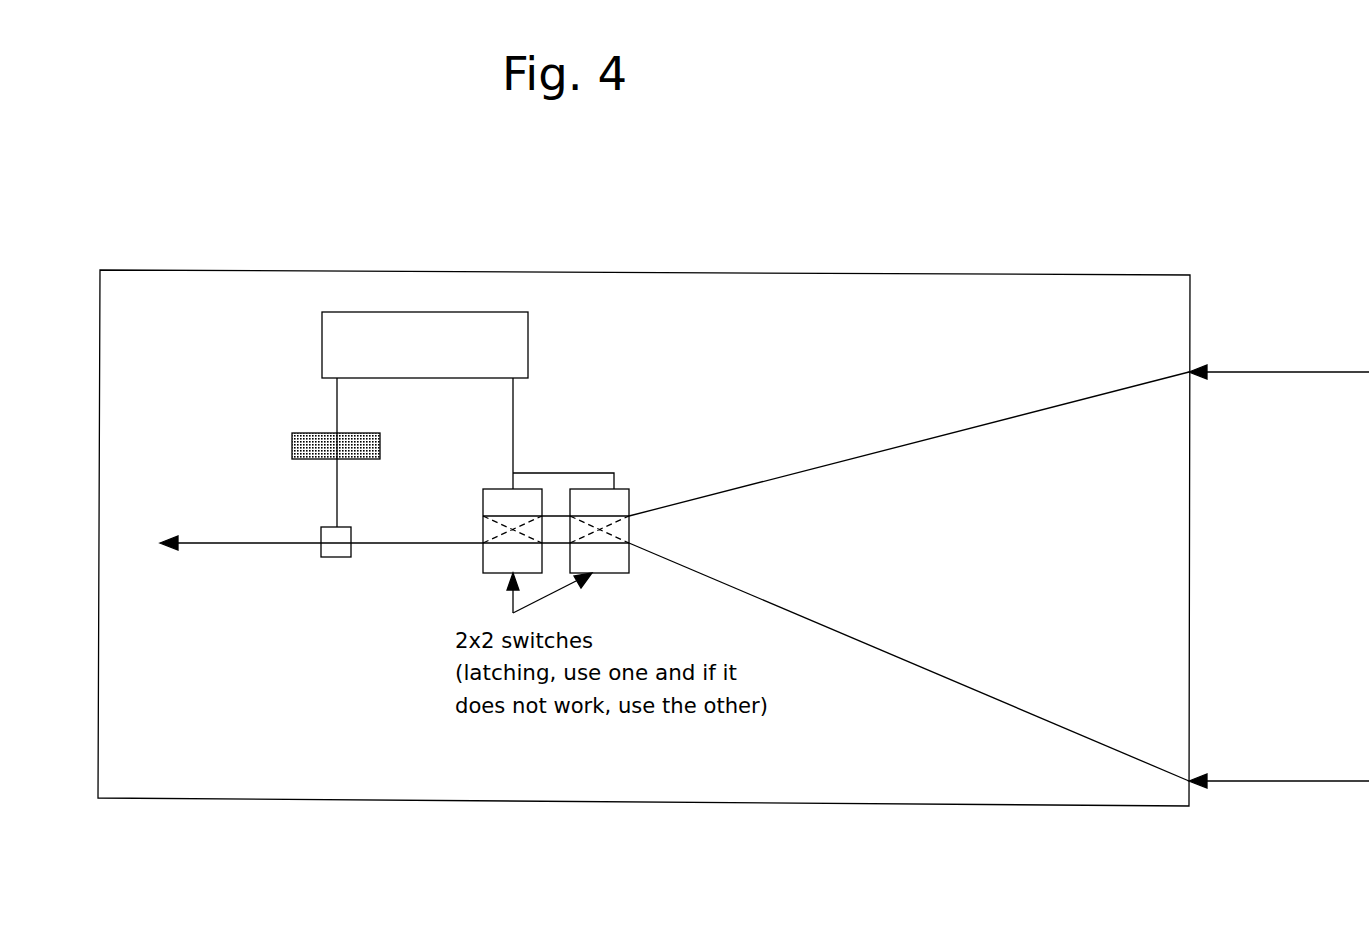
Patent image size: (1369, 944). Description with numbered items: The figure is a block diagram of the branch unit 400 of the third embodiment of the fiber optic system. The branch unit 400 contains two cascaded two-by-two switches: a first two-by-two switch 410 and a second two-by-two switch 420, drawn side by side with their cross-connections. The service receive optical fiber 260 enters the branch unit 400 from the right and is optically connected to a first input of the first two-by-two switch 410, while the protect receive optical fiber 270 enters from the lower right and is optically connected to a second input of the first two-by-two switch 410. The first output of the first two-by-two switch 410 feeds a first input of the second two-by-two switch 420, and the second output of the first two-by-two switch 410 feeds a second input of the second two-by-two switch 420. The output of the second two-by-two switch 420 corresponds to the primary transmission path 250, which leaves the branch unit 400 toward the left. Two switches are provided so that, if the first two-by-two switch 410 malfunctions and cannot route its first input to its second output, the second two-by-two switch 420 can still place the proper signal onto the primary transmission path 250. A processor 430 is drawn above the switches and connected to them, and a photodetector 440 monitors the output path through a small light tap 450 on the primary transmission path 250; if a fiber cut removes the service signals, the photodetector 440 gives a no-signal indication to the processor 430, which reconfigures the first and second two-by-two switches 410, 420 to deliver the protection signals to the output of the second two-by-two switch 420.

The branch unit 400 is at (385, 270).
The processor 430 is at (322, 345).
The photodetector 440 is at (290, 446).
The 2% light tap 450 is at (310, 565).
The second 2×2 switch 420 is at (483, 510).
The first 2×2 switch 410 is at (630, 502).
The primary transmission path 250 is at (256, 545).
The service receive optical fiber 260 is at (1312, 372).
The protect receive optical fiber 270 is at (1323, 781).